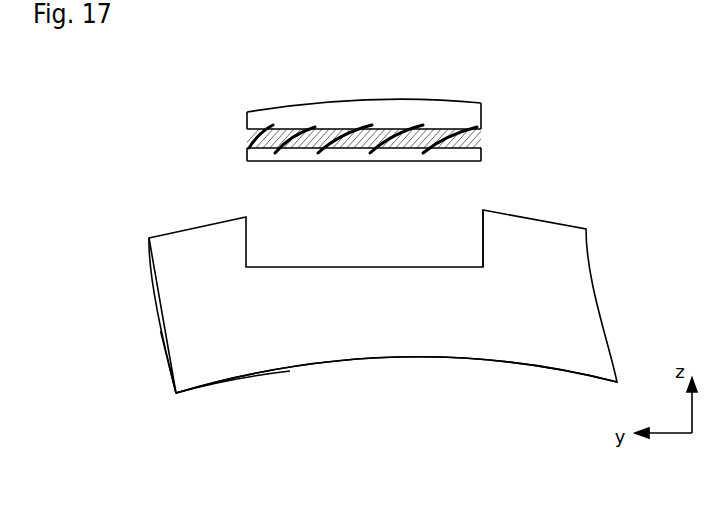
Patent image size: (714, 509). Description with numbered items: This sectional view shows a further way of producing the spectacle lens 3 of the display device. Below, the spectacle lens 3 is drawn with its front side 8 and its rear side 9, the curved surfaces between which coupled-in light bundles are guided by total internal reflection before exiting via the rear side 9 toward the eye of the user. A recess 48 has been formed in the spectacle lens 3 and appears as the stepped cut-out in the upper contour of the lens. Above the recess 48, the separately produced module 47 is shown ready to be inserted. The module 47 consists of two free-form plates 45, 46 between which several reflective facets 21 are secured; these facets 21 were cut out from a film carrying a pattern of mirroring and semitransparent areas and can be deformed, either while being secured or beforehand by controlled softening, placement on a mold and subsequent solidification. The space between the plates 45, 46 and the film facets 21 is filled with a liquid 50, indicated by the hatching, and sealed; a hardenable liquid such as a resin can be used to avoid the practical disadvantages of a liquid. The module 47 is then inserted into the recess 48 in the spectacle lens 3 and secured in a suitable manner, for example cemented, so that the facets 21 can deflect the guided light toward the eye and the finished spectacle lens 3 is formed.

The spectacle lens 3 is at (229, 363).
The front side 8 is at (562, 220).
The rear side 9 is at (530, 365).
The reflective facets 21 is at (252, 128).
The free-form plate 45 is at (477, 113).
The free-form plate 46 is at (477, 156).
The module 47 is at (469, 101).
The recess 48 is at (483, 247).
The liquid 50 is at (357, 137).